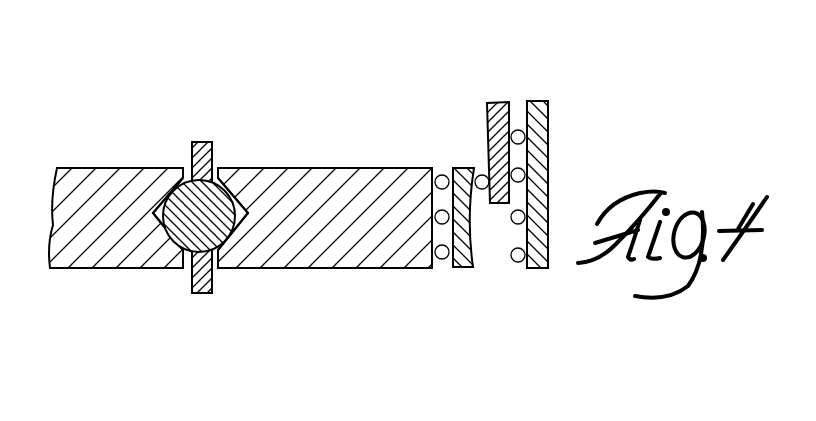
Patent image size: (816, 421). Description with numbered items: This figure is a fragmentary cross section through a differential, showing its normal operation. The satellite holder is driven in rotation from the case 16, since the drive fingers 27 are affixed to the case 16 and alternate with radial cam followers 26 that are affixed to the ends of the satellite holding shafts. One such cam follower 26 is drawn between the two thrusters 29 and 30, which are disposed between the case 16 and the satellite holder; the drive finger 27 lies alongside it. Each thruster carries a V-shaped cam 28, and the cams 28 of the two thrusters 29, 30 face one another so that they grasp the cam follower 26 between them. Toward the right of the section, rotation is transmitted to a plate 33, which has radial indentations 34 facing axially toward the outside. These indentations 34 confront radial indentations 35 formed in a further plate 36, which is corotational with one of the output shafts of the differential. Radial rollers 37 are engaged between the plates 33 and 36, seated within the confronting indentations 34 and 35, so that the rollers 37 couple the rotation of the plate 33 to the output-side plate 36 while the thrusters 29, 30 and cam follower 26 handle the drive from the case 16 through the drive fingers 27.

The frame member 16 is at (538, 140).
The radial cam follower 26 is at (222, 237).
The drive finger 27 is at (202, 147).
The V-shaped cam 28 is at (243, 212).
The thruster 29 is at (85, 182).
The thruster 30 is at (345, 178).
The plate 33 is at (457, 266).
The radial indentation 34 is at (472, 228).
The radial indentation 35 is at (492, 147).
The plate 36 is at (507, 103).
The radial roller 37 is at (482, 175).